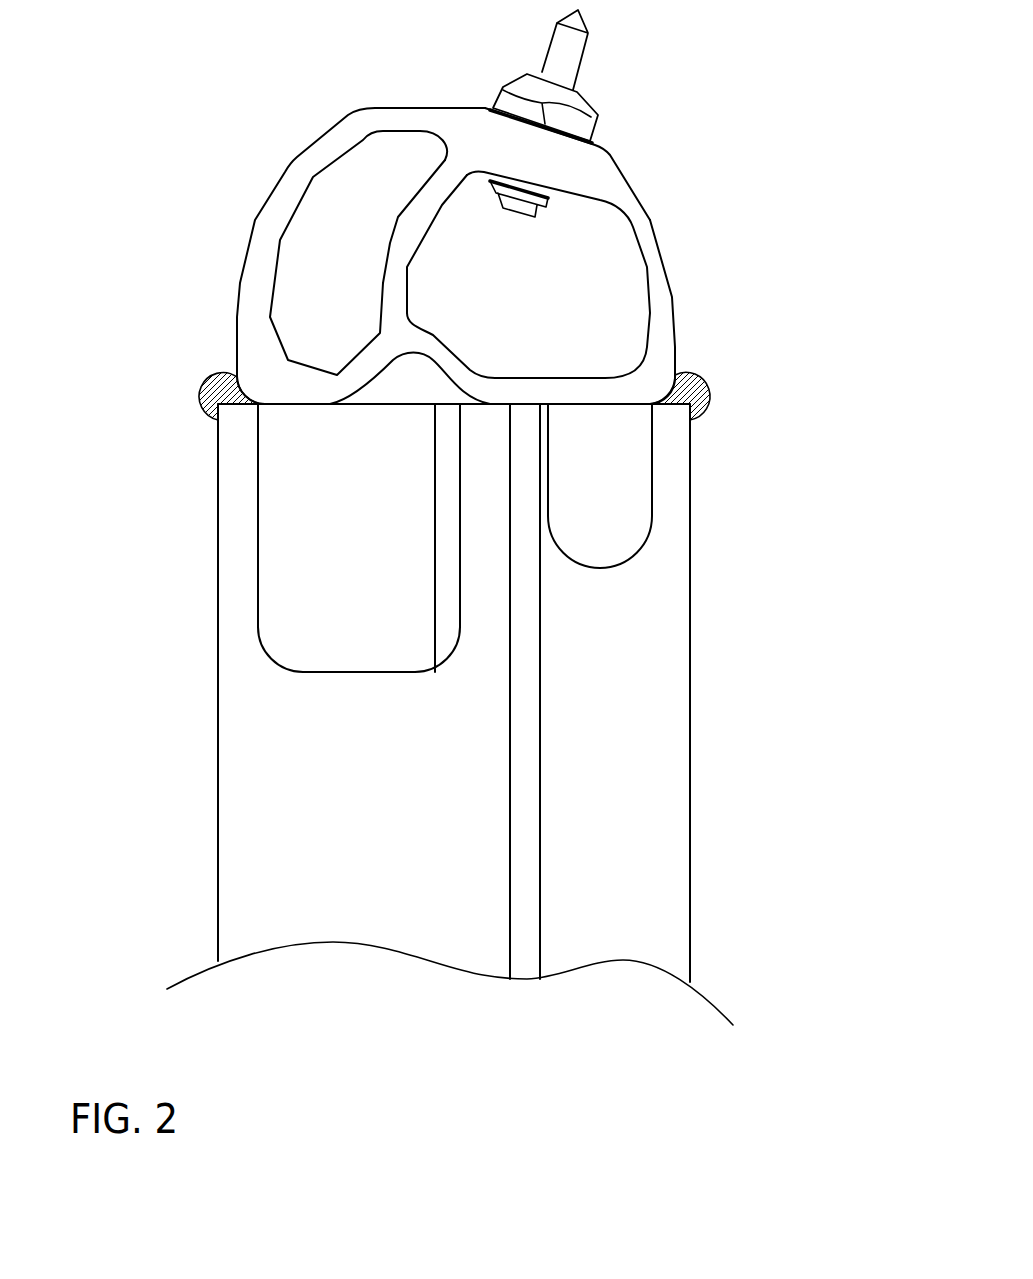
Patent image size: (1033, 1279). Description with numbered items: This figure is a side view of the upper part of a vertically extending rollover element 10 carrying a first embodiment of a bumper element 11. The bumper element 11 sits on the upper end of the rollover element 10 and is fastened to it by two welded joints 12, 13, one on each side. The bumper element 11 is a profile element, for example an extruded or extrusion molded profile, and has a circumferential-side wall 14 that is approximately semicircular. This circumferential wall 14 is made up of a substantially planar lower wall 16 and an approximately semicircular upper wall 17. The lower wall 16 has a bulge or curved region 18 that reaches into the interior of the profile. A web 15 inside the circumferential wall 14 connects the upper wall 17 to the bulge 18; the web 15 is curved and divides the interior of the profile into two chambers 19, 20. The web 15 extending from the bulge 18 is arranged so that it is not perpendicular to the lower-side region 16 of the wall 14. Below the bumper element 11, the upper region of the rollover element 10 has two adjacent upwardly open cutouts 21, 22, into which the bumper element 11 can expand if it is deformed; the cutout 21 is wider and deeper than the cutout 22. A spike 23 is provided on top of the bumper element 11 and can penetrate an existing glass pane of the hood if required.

The rollover element 10 is at (460, 714).
The bumper element 11 is at (506, 270).
The welded joint 12 is at (220, 387).
The welded joint 13 is at (695, 393).
The circumferential-side wall 14 is at (627, 197).
The web 15 is at (408, 233).
The lower wall 16 is at (597, 392).
The upper wall 17 is at (649, 226).
The bulge 18 is at (433, 352).
The chamber 19 is at (310, 281).
The chamber 20 is at (572, 285).
The cutout 21 is at (318, 571).
The cutout 22 is at (620, 526).
The spike 23 is at (570, 52).